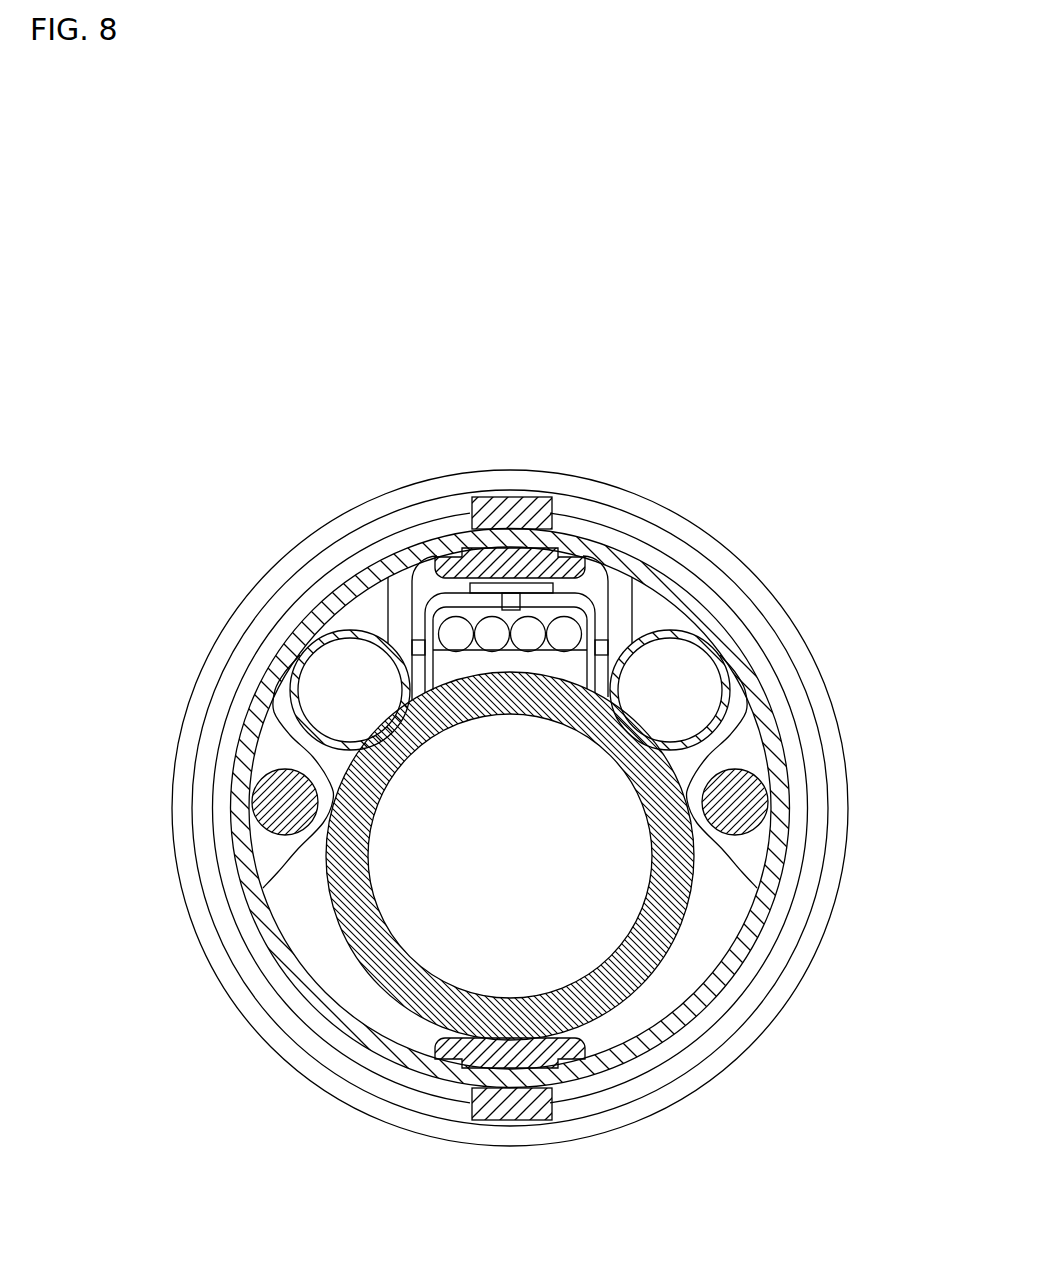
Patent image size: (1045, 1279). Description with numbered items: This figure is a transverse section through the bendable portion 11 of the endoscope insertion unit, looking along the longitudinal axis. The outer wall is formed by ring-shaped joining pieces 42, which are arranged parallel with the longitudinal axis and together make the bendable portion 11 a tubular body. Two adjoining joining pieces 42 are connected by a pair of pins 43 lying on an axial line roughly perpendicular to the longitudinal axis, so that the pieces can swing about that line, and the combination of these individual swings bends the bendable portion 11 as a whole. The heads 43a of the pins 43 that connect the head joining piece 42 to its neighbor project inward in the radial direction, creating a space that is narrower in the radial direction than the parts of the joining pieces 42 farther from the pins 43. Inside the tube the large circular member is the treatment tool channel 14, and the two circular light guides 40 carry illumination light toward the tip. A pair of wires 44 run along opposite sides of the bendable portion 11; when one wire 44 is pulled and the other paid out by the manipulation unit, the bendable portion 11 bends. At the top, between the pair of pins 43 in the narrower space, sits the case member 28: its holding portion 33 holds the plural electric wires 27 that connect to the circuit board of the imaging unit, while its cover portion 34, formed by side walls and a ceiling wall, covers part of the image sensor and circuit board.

The bendable portion 11 is at (261, 474).
The treatment tool channel 14 is at (407, 935).
The electric wires 27 is at (447, 627).
The case member 28 is at (702, 418).
The holding portion 33 is at (599, 558).
The cover portion 34 is at (612, 596).
The light guides 40 is at (325, 668).
The joining pieces 42 is at (348, 1030).
The pins 43 is at (512, 500).
The heads 43a is at (582, 1043).
The wires 44 is at (280, 802).